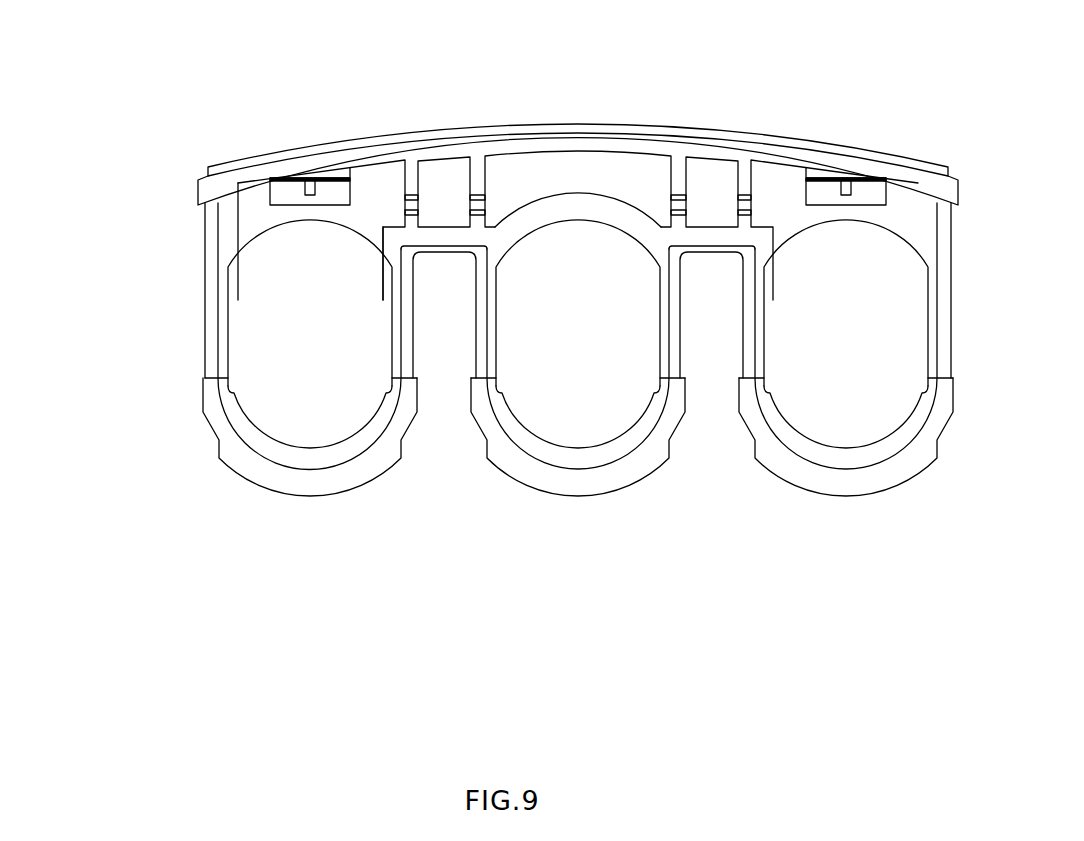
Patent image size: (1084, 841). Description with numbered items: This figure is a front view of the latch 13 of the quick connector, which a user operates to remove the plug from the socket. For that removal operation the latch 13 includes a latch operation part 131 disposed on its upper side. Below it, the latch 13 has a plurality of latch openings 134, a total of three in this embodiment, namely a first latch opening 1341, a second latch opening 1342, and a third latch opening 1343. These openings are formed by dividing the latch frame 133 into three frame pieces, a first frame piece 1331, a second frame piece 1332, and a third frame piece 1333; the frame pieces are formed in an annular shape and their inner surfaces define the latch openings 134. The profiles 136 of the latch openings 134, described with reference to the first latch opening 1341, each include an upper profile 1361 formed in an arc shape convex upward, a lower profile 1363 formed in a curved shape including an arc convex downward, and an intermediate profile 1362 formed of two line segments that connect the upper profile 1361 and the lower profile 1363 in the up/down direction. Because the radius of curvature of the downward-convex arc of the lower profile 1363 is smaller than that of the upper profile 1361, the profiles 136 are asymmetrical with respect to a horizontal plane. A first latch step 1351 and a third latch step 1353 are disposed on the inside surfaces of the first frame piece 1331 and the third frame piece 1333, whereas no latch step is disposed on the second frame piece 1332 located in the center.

The latch 13 is at (500, 313).
The latch operation part 131 is at (893, 152).
The latch frame 133 is at (558, 472).
The first frame piece 1331 is at (200, 425).
The second frame piece 1332 is at (480, 350).
The third frame piece 1333 is at (826, 441).
The latch openings 134 is at (578, 144).
The first latch opening 1341 is at (328, 283).
The second latch opening 1342 is at (587, 283).
The third latch opening 1343 is at (827, 174).
The first latch step 1351 is at (302, 457).
The third latch step 1353 is at (844, 455).
The profiles 136 is at (222, 326).
The upper profile 1361 is at (250, 238).
The intermediate profile 1362 is at (226, 288).
The lower profile 1363 is at (262, 390).